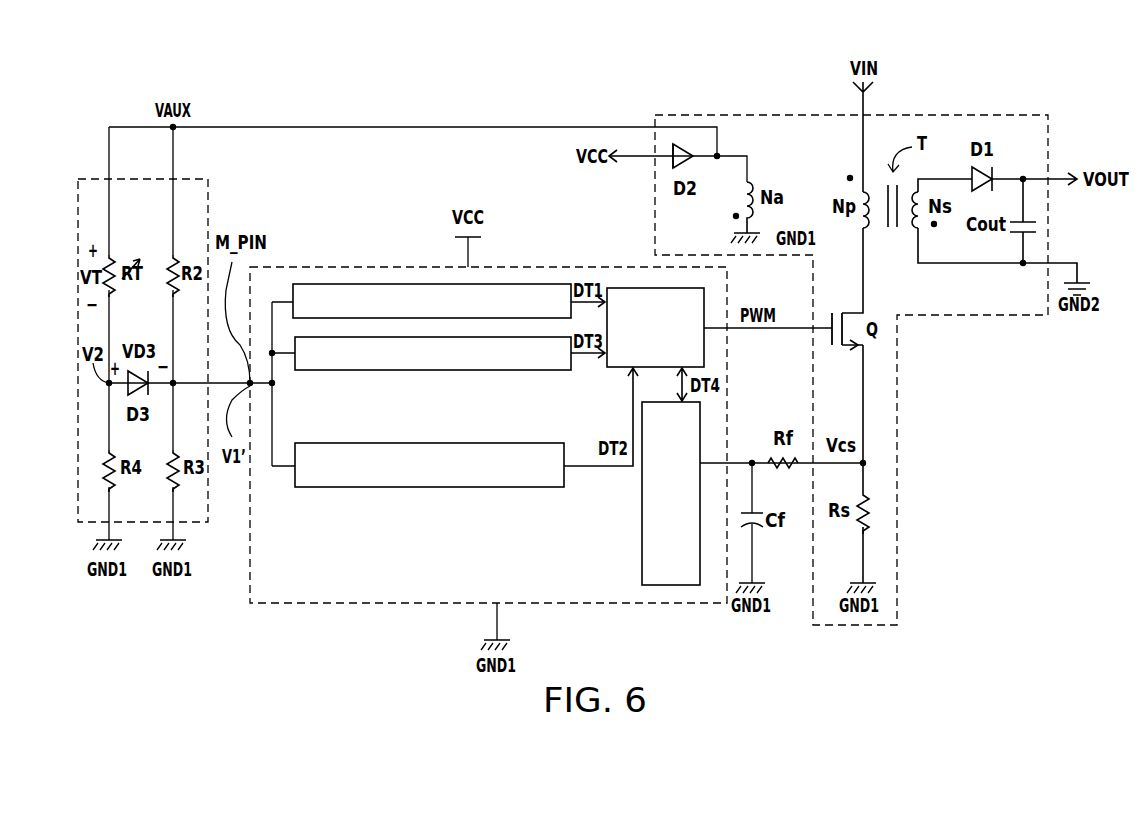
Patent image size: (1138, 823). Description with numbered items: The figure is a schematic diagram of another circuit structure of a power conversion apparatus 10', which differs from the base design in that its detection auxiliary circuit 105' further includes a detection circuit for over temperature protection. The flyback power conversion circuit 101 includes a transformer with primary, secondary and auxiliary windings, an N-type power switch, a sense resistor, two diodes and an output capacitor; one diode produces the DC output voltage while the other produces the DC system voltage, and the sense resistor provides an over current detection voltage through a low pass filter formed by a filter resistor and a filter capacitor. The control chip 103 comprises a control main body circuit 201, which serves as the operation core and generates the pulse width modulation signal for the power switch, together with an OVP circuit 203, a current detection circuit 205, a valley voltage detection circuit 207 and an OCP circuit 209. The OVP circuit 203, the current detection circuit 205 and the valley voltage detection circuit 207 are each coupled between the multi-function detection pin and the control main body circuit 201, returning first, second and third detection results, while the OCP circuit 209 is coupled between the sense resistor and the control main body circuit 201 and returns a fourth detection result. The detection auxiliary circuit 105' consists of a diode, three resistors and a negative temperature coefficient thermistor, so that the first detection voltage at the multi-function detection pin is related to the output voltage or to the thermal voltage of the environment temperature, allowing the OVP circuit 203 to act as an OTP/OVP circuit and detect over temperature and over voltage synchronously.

The power conversion apparatus 10' is at (1071, 617).
The flyback power conversion circuit 101 is at (948, 115).
The control chip 103 is at (322, 267).
The detection auxiliary circuit 105' is at (176, 337).
The control main body circuit 201 is at (642, 288).
The OVP circuit 203 is at (407, 284).
The current detection circuit 205 is at (455, 443).
The valley voltage detection circuit 207 is at (402, 370).
The OCP circuit 209 is at (642, 498).